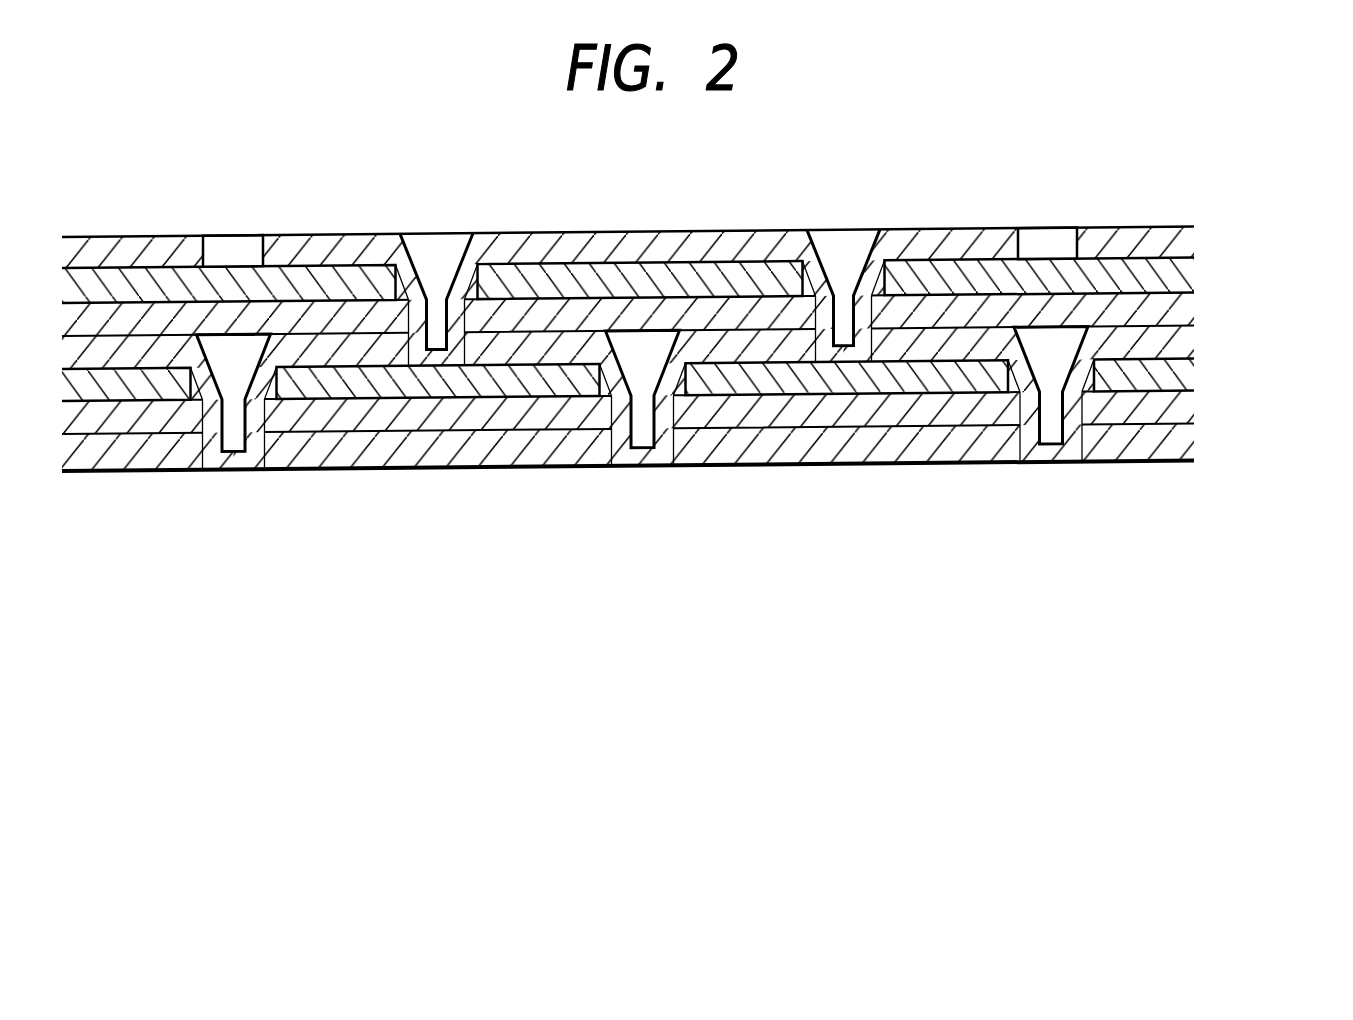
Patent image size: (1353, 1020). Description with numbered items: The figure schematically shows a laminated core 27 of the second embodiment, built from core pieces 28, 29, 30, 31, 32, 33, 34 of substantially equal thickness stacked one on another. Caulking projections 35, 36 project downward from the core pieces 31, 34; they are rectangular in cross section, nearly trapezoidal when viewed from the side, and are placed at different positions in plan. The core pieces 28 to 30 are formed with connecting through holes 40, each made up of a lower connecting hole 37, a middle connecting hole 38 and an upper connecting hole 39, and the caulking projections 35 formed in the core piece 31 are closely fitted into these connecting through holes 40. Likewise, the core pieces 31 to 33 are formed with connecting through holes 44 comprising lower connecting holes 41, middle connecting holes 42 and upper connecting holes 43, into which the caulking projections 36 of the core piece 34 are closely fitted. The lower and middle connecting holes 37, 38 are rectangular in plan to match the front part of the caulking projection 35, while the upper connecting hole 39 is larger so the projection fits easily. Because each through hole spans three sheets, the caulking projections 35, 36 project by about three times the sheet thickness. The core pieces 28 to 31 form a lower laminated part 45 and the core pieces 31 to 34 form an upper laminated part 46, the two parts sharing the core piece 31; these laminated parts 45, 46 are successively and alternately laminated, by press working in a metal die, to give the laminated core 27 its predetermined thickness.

The laminated core 27 is at (1137, 183).
The core piece 28 is at (1190, 441).
The core piece 29 is at (1190, 407).
The core piece 30 is at (1190, 375).
The core piece 31 is at (1190, 342).
The core piece 32 is at (1190, 309).
The core piece 33 is at (1190, 275).
The core piece 34 is at (1190, 242).
The caulking projection 35 is at (233, 472).
The caulking projection 36 is at (450, 360).
The lower connecting hole 37 is at (213, 234).
The middle connecting hole 38 is at (1020, 392).
The upper connecting hole 39 is at (1008, 380).
The connecting through hole 40 is at (452, 640).
The lower connecting hole 41 is at (410, 358).
The middle connecting hole 42 is at (412, 300).
The upper connecting hole 43 is at (397, 270).
The connecting through hole 44 is at (277, 570).
The lower laminated part 45 is at (1308, 344).
The upper laminated part 46 is at (1308, 215).